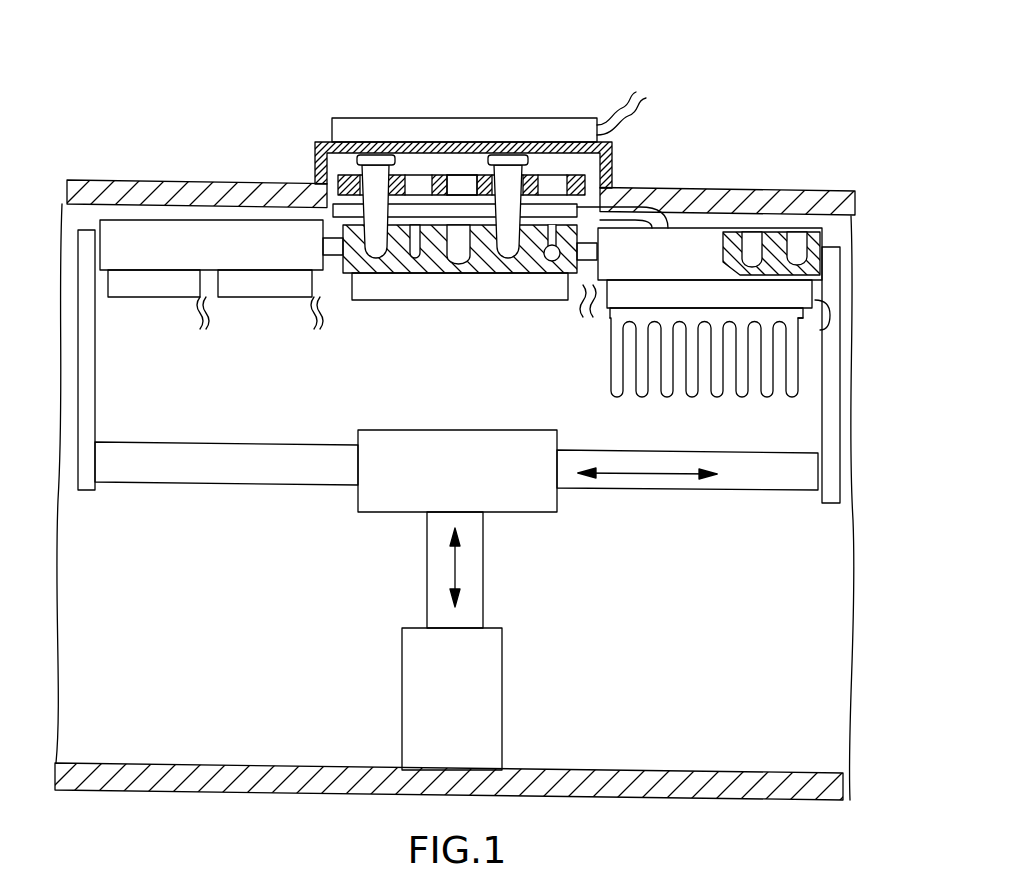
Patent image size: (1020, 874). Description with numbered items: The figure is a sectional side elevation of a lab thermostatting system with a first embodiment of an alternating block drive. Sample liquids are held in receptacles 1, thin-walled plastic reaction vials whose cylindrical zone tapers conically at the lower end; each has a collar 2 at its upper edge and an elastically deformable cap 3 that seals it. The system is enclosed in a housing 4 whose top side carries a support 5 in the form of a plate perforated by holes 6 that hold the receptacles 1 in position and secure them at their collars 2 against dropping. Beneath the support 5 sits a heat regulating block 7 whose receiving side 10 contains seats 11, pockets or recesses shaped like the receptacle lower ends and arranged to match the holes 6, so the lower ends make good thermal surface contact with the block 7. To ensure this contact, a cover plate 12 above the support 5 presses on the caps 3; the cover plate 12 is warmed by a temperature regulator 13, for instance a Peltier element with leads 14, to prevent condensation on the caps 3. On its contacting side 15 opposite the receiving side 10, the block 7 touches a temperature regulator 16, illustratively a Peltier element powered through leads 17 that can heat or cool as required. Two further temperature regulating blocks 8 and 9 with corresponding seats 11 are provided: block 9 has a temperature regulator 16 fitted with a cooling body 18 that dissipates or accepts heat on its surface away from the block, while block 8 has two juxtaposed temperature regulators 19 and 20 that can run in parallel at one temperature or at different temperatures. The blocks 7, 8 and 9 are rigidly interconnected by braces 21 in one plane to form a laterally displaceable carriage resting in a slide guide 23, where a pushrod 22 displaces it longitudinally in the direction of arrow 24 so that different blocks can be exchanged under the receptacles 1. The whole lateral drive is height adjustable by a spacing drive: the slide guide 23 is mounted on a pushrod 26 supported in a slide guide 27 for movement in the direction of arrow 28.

The receptacle 1 is at (459, 212).
The collar 2 is at (355, 160).
The cap 3 is at (385, 175).
The housing 4 is at (812, 204).
The support 5 is at (440, 180).
The holes 6 is at (460, 188).
The heat regulating block 7 is at (492, 262).
The temperature regulating block 8 is at (183, 243).
The temperature regulating block 9 is at (704, 278).
The receiving side 10 is at (665, 225).
The seats 11 is at (750, 262).
The cover plate 12 is at (612, 175).
The temperature regulator 13 is at (510, 130).
The leads 14 is at (640, 96).
The contacting side 15 is at (387, 268).
The temperature regulator 16 is at (453, 290).
The leads 17 is at (590, 318).
The cooling body 18 is at (717, 355).
The temperature regulator 19 is at (138, 287).
The temperature regulator 20 is at (255, 287).
The braces 21 is at (335, 255).
The pushrod 22 is at (150, 467).
The slide guide 23 is at (548, 500).
The arrow 24 is at (650, 478).
The pushrod 26 is at (472, 603).
The slide guide 27 is at (490, 683).
The arrow 28 is at (455, 563).